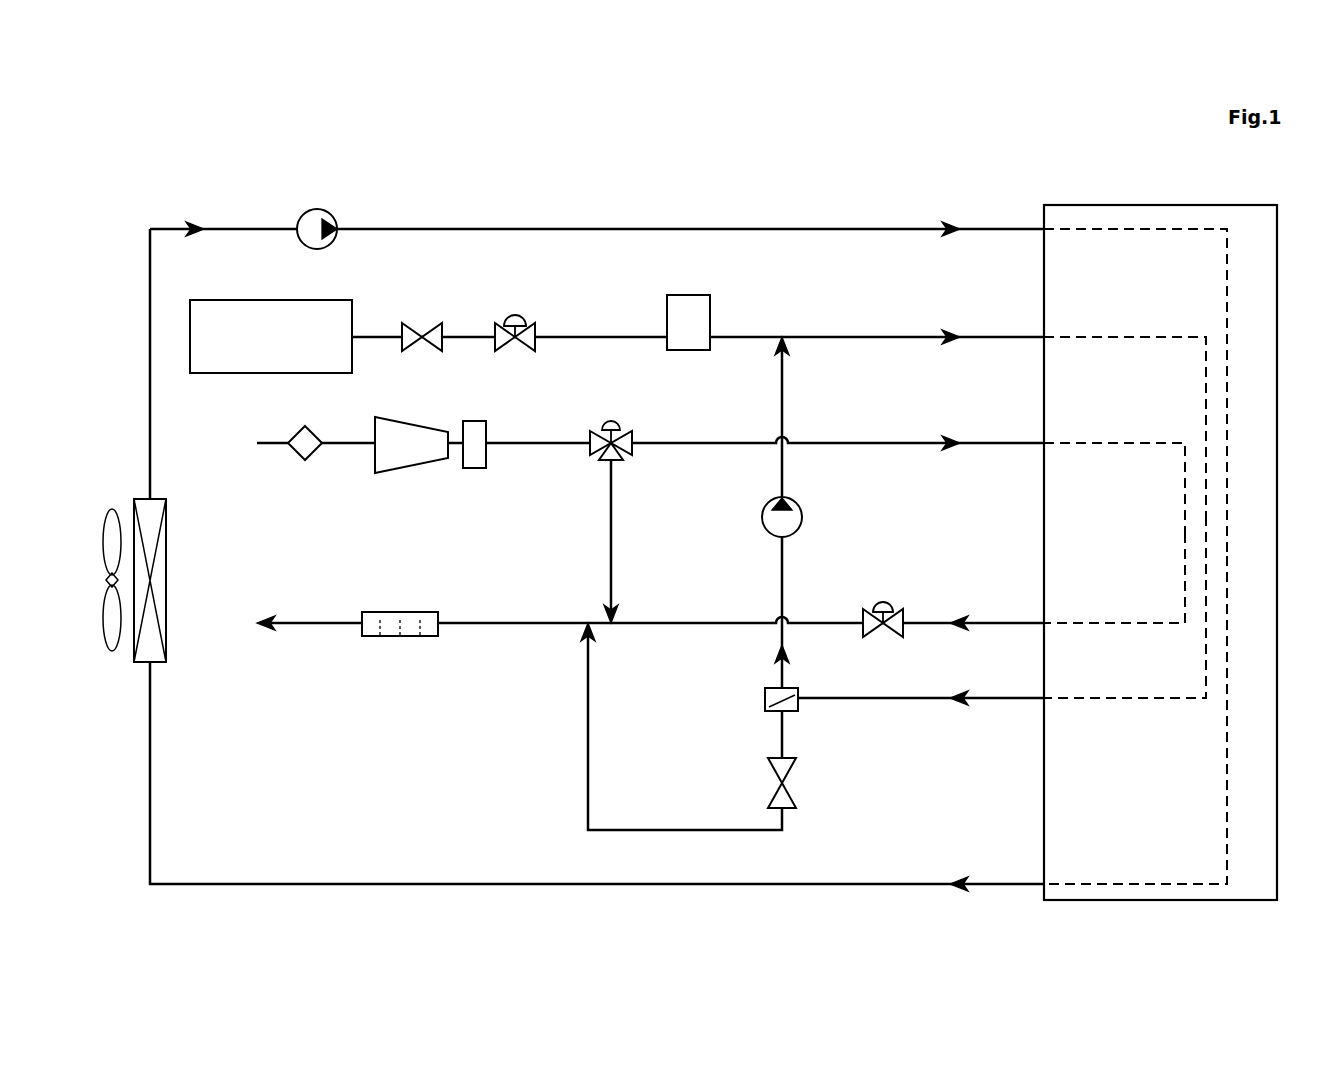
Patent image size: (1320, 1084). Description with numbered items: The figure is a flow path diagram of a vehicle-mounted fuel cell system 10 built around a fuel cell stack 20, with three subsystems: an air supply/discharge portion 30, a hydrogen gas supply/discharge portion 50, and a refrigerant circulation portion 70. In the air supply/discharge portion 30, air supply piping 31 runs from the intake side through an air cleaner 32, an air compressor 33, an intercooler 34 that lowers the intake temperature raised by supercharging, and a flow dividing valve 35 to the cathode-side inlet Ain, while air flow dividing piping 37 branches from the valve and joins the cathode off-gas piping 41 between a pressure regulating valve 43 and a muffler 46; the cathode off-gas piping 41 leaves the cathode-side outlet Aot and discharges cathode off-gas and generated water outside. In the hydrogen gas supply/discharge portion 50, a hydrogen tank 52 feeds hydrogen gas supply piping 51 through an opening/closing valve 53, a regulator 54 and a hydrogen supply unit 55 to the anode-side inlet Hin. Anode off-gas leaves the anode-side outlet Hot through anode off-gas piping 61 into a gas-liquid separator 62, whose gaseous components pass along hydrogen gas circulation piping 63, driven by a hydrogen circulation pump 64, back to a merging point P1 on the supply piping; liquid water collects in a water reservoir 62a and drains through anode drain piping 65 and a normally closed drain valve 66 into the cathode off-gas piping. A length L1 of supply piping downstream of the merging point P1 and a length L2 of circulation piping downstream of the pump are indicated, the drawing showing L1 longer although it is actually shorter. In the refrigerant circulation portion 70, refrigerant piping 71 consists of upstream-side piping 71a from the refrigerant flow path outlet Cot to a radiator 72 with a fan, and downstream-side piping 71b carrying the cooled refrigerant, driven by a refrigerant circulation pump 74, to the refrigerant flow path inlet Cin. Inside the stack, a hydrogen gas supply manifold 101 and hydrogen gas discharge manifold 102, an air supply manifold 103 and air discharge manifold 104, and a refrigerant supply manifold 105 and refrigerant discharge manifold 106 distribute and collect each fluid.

The fuel cell system 10 is at (823, 158).
The fuel cell stack 20 is at (1194, 205).
The air supply/discharge portion 30 is at (540, 421).
The air supply piping 31 is at (688, 443).
The air cleaner 32 is at (305, 426).
The air compressor 33 is at (415, 417).
The intercooler 34 is at (474, 421).
The flow dividing valve 35 is at (618, 428).
The air flow dividing piping 37 is at (616, 545).
The cathode off-gas piping 41 is at (520, 623).
The pressure regulating valve 43 is at (897, 612).
The muffler 46 is at (405, 612).
The hydrogen gas supply/discharge portion 50 is at (597, 314).
The hydrogen gas supply piping 51 is at (734, 337).
The hydrogen tank 52 is at (227, 300).
The opening/closing valve 53 is at (425, 323).
The regulator 54 is at (522, 315).
The hydrogen supply unit 55 is at (688, 295).
The anode off-gas piping 61 is at (900, 698).
The gas-liquid separator 62 is at (791, 712).
The water reservoir 62a is at (765, 694).
The hydrogen gas circulation piping 63 is at (784, 568).
The hydrogen circulation pump 64 is at (802, 517).
The anode drain piping 65 is at (784, 751).
The drain valve 66 is at (796, 794).
The refrigerant circulation portion 70 is at (455, 206).
The refrigerant piping 71 is at (893, 884).
The upstream-side piping 71a is at (380, 884).
The downstream-side piping 71b is at (262, 229).
The radiator 72 is at (146, 499).
The refrigerant circulation pump 74 is at (317, 209).
The hydrogen gas supply manifold 101 is at (1105, 337).
The hydrogen gas discharge manifold 102 is at (1105, 698).
The air supply manifold 103 is at (1105, 443).
The air discharge manifold 104 is at (1105, 623).
The refrigerant supply manifold 105 is at (1105, 229).
The refrigerant discharge manifold 106 is at (1165, 884).
The merging point P1 is at (782, 337).
The length L1 is at (790, 342).
The length L2 is at (782, 497).
The refrigerant flow path inlet Cin is at (1044, 229).
The refrigerant flow path outlet Cot is at (1044, 884).
The anode-side inlet Hin is at (1044, 337).
The anode-side outlet Hot is at (1044, 698).
The cathode-side inlet Ain is at (1044, 443).
The cathode-side outlet Aot is at (1044, 623).